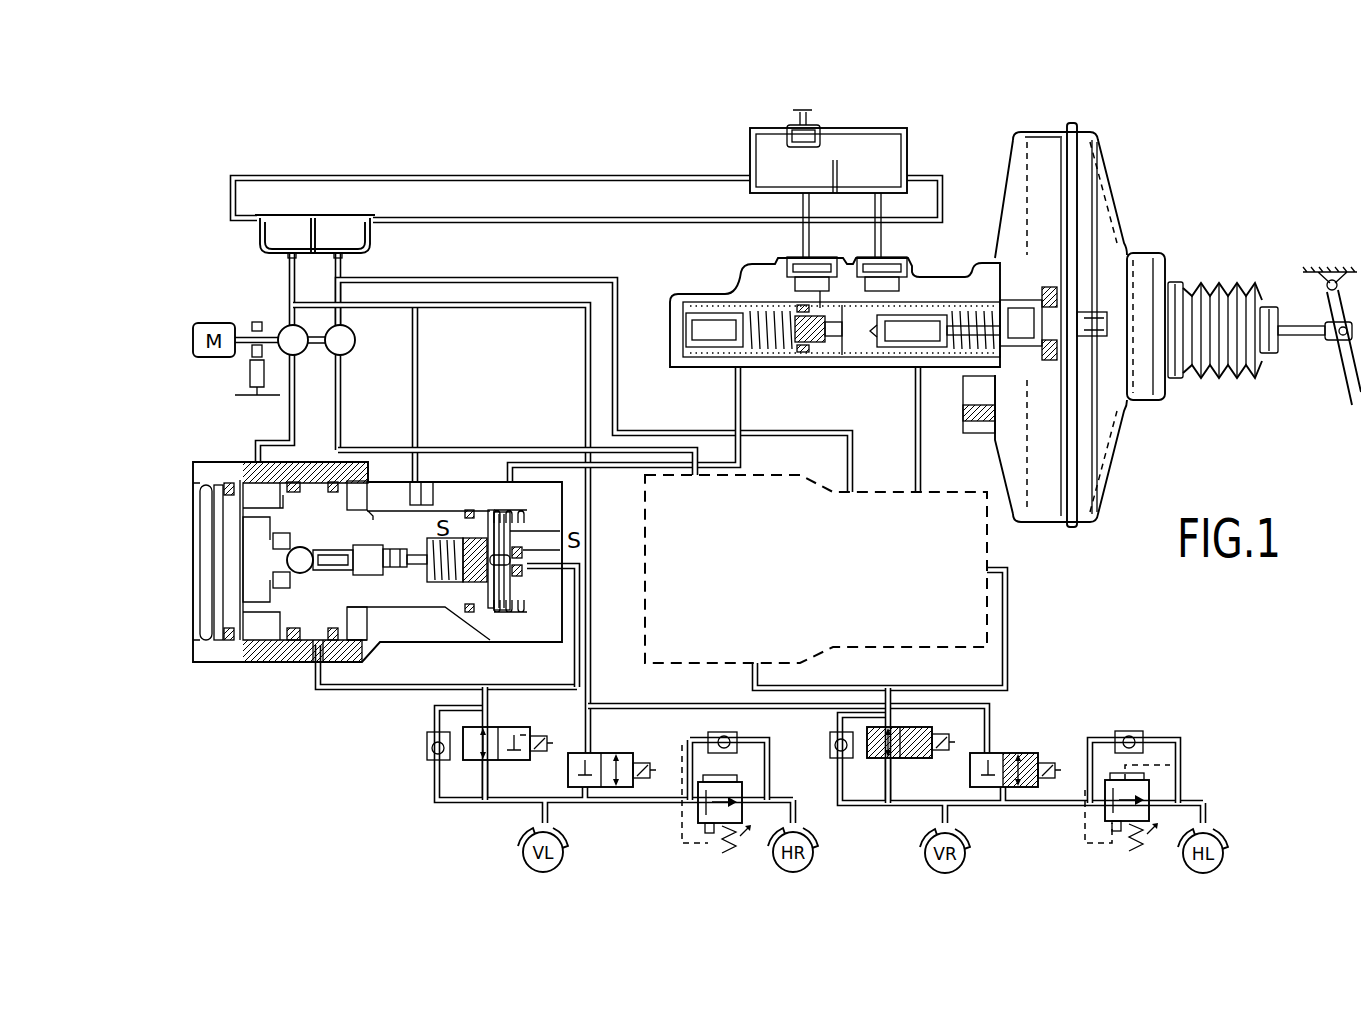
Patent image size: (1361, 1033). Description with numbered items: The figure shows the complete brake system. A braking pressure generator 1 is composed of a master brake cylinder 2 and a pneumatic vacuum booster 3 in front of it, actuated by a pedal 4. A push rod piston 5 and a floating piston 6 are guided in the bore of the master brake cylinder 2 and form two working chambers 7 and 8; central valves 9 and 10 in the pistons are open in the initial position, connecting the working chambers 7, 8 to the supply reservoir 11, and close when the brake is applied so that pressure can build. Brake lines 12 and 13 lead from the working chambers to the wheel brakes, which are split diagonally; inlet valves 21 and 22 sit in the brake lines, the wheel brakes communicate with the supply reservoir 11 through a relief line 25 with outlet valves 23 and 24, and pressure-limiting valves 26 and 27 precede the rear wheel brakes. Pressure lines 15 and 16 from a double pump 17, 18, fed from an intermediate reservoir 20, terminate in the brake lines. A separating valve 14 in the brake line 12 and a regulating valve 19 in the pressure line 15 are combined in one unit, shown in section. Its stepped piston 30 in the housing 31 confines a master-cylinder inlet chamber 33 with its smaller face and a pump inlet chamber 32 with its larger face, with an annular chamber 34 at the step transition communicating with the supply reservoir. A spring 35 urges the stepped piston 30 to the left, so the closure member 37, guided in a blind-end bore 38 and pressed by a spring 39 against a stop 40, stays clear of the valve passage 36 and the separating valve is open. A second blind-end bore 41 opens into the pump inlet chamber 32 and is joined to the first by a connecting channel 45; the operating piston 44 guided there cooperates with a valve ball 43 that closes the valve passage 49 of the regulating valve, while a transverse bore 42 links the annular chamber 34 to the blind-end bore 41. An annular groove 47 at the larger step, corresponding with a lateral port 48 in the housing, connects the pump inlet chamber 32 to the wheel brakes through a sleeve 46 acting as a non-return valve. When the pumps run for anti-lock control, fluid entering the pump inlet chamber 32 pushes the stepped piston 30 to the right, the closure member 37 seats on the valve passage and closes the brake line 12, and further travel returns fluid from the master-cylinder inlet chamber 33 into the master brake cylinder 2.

The braking pressure generator 1 is at (835, 312).
The master brake cylinder 2 is at (849, 374).
The pneumatic vacuum booster 3 is at (1125, 218).
The pedal 4 is at (1354, 397).
The push rod piston 5 is at (1043, 372).
The floating piston 6 is at (868, 347).
The working chamber 7 is at (960, 352).
The working chamber 8 is at (773, 346).
The central valve 9 is at (826, 351).
The central valve 10 is at (1013, 378).
The supply reservoir 11 is at (908, 148).
The brake line 12 is at (740, 400).
The brake line 13 is at (916, 404).
The separating valve 14 is at (532, 584).
The pressure line 15 is at (293, 396).
The pressure line 16 is at (531, 450).
The pump 17 is at (301, 351).
The pump 18 is at (351, 351).
The regulating valve 19 is at (279, 566).
The intermediate reservoir 20 is at (365, 238).
The inlet valve 21 is at (498, 760).
The inlet valve 22 is at (902, 759).
The outlet valve 23 is at (621, 755).
The outlet valve 24 is at (1026, 753).
The relief line 25 is at (581, 620).
The pressure-limiting valve 26 is at (688, 843).
The pressure-limiting valve 27 is at (1110, 848).
The stepped piston 30 is at (396, 600).
The housing 31 is at (432, 634).
The pump inlet chamber 32 is at (250, 488).
The master-cylinder inlet chamber 33 is at (491, 560).
The annular chamber 34 is at (358, 634).
The spring 35 is at (535, 512).
The valve passage 36 is at (545, 562).
The closure member 37 is at (474, 585).
The blind-end bore 38 is at (463, 602).
The spring 39 is at (455, 545).
The stop 40 is at (498, 590).
The blind-end bore 41 is at (315, 630).
The transverse bore 42 is at (344, 452).
The valve ball 43 is at (300, 487).
The operating piston 44 is at (346, 530).
The connecting channel 45 is at (425, 540).
The sleeve 46 is at (292, 643).
The annular groove 47 is at (297, 614).
The lateral port 48 is at (322, 654).
The valve passage 49 is at (288, 556).